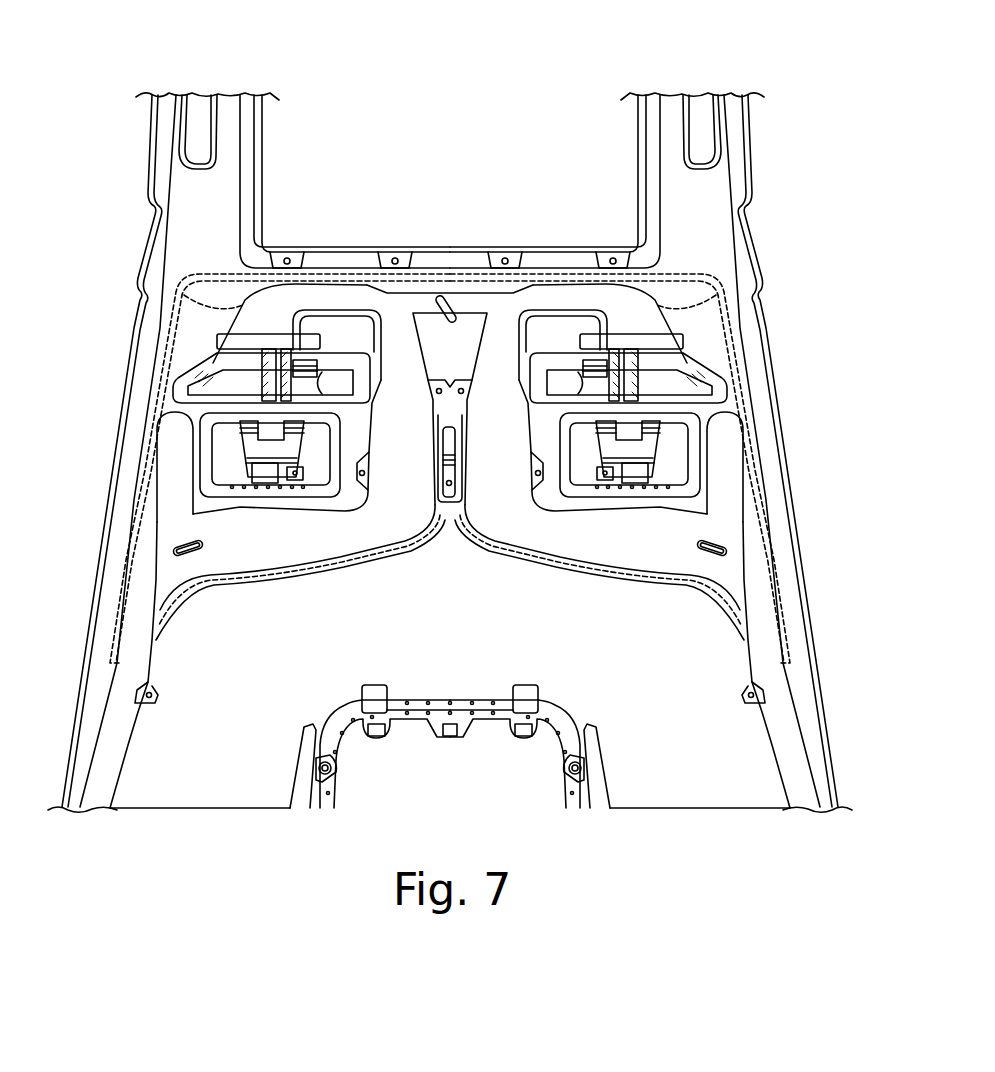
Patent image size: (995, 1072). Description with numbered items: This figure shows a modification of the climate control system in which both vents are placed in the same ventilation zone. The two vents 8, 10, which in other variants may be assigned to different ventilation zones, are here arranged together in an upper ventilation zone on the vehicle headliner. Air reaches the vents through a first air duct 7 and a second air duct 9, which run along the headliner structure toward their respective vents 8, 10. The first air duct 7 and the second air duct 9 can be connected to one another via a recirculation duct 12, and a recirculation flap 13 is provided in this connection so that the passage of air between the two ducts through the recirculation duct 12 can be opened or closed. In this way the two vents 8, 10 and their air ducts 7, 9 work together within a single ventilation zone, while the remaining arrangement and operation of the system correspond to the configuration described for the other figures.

The first air duct 7 is at (620, 548).
The vent 8 is at (655, 372).
The second air duct 9 is at (293, 528).
The vent 10 is at (194, 376).
The recirculation duct 12 is at (503, 307).
The recirculation flap 13 is at (443, 295).